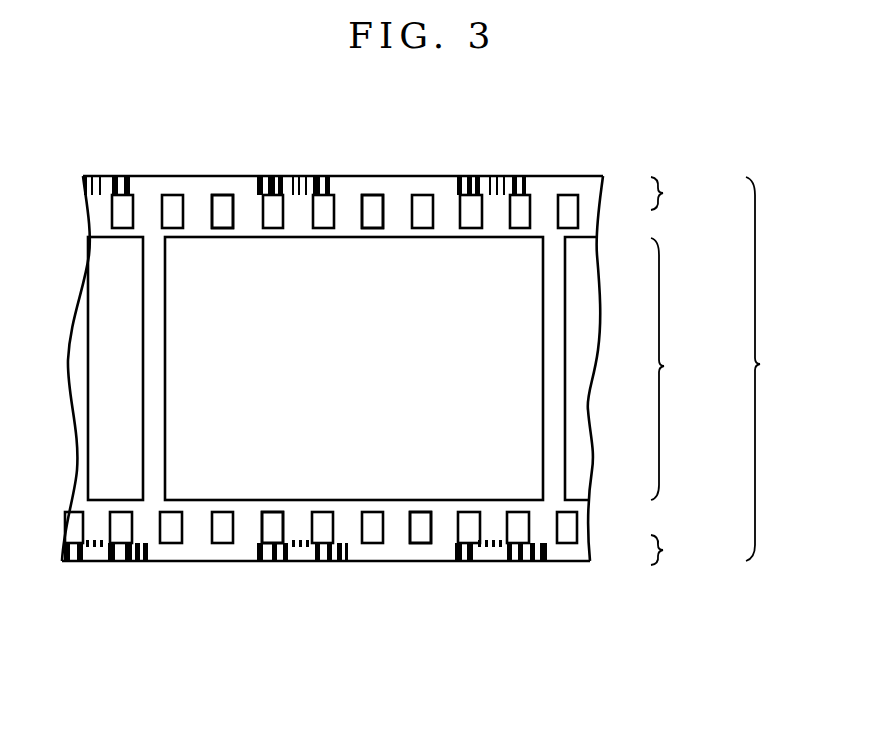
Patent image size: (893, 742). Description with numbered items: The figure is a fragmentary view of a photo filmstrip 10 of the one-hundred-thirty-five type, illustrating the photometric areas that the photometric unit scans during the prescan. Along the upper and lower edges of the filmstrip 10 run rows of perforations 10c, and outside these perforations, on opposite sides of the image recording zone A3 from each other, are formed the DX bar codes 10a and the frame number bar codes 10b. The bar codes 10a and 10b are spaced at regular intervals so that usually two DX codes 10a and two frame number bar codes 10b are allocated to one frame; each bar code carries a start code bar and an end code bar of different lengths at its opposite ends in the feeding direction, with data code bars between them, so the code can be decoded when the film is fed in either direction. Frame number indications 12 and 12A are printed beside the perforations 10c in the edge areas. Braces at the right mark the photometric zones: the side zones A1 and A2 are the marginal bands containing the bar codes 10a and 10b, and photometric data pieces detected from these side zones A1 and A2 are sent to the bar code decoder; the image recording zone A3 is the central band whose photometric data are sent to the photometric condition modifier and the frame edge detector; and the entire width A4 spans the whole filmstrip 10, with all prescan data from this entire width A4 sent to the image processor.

The filmstrip 10 is at (190, 176).
The DX bar codes 10a is at (297, 562).
The frame number bar codes 10b is at (287, 178).
The perforations 10c is at (222, 222).
The frame number 12 is at (225, 370).
The frame number 12A is at (429, 370).
The side zone A1 is at (676, 550).
The side zone A2 is at (676, 193).
The image recording zone A3 is at (677, 369).
The entire width A4 is at (775, 369).